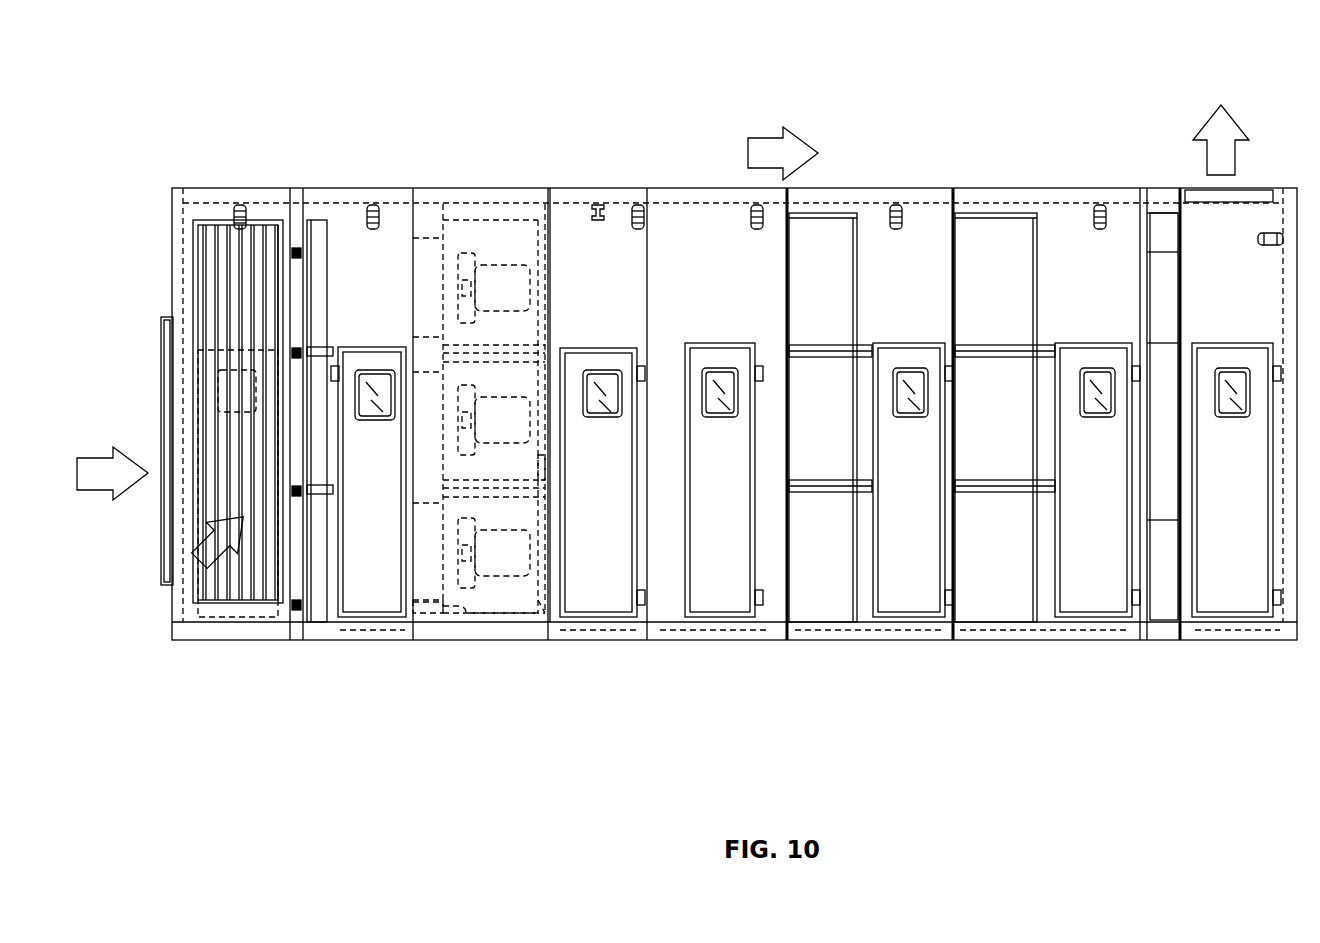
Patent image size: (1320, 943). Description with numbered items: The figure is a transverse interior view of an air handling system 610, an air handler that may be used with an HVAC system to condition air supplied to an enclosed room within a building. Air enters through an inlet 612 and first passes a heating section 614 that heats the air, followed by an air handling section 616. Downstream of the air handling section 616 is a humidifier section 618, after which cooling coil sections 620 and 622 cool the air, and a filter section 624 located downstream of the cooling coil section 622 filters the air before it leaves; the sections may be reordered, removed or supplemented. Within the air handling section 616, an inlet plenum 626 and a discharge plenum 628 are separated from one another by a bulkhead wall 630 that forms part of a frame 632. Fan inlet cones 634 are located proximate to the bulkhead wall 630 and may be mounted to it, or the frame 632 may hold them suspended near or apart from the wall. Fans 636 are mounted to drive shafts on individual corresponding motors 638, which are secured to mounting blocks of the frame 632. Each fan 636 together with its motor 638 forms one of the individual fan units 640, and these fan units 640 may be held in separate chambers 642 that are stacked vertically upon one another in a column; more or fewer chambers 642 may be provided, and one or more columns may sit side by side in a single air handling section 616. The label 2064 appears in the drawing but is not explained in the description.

The air handling system 610 is at (250, 128).
The inlet 612 is at (144, 388).
The heating section 614 is at (413, 178).
The air handling section 616 is at (647, 167).
The humidifier section 618 is at (787, 86).
The cooling coil section 620 is at (953, 86).
The cooling coil section 622 is at (1140, 86).
The filter section 624 is at (1295, 86).
The inlet plenum 626 is at (415, 702).
The discharge plenum 628 is at (413, 690).
The bulkhead wall 630 is at (465, 607).
The frame 632 is at (540, 613).
The fan inlet cones 634 is at (447, 553).
The fans 636 is at (447, 452).
The motors 638 is at (525, 427).
The fan units 640 is at (514, 458).
The chambers 642 is at (527, 515).
The partition wall 2064 is at (548, 296).